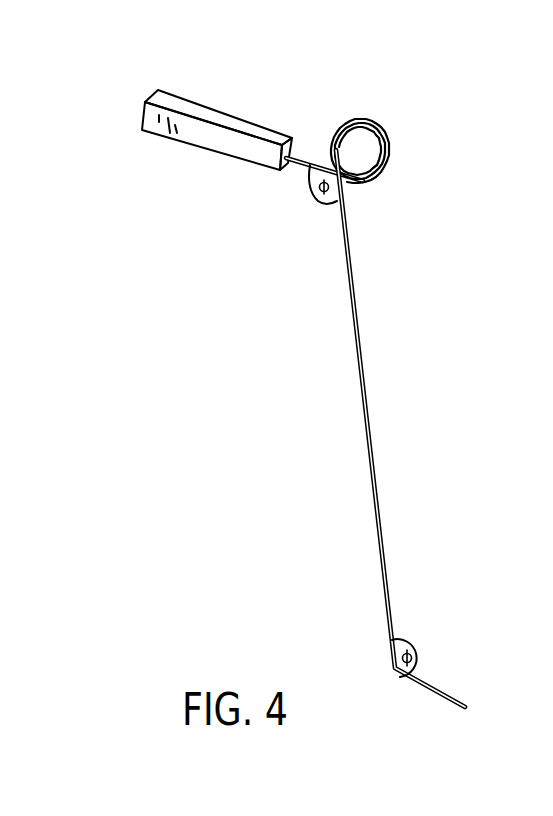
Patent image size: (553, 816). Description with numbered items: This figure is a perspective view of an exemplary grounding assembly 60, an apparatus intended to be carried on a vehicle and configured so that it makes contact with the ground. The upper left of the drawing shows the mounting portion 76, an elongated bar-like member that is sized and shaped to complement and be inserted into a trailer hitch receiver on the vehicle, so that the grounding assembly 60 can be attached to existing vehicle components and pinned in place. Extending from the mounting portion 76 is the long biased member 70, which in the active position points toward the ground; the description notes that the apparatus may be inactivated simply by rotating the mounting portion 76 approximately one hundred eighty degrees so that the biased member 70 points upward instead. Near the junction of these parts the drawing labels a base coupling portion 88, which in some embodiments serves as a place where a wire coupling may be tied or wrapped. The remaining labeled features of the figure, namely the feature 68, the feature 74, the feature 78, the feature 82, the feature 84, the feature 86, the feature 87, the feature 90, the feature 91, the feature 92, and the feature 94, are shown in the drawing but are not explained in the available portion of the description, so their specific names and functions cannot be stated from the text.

The grounding assembly 60 is at (472, 378).
The torsion spring 68 is at (443, 428).
The biased member 70 is at (443, 428).
The pivot bracket 74 is at (304, 170).
The mounting portion 76 is at (202, 110).
The coil portion 78 is at (400, 132).
The force direction 82 is at (350, 533).
The force direction 84 is at (413, 557).
The end leg 86 is at (427, 693).
The pivot bracket 87 is at (418, 652).
The base coupling portion 88 is at (313, 167).
The short arm 90 is at (305, 147).
The bend 91 is at (383, 615).
The coil windings 92 is at (400, 126).
The attachment end 94 is at (302, 170).